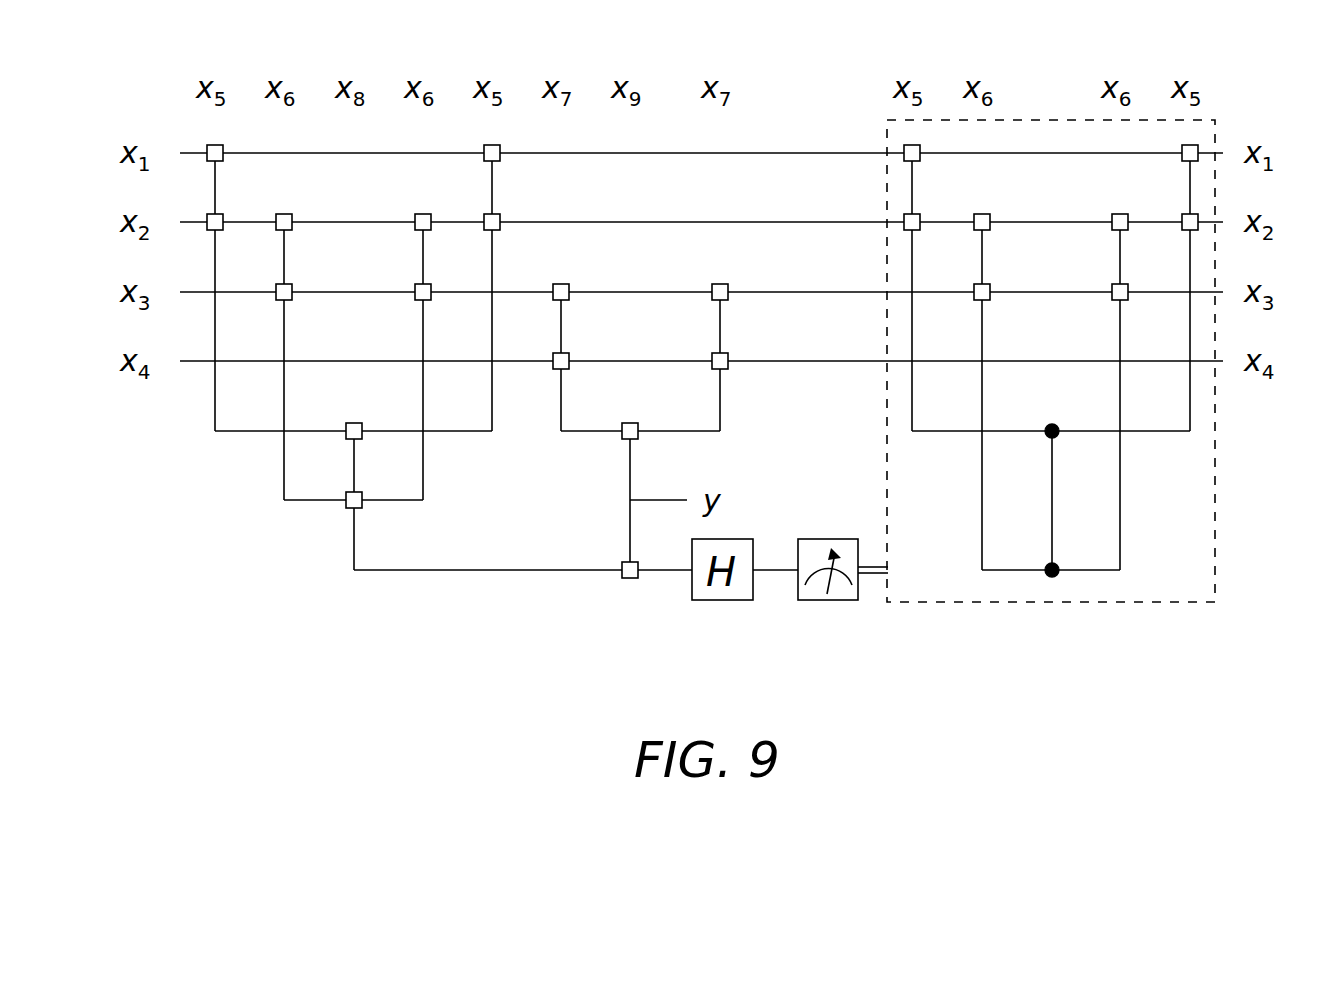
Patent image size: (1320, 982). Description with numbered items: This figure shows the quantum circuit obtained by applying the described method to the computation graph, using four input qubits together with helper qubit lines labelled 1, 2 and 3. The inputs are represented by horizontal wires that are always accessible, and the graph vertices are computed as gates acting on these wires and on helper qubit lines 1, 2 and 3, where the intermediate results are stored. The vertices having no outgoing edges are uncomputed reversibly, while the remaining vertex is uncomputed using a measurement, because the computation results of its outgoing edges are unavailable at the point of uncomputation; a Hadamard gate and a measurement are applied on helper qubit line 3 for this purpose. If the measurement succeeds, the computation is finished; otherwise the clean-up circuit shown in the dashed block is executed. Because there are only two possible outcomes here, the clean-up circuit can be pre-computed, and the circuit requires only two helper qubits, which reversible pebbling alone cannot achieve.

The first ancilla qubit wire 1 is at (665, 431).
The second ancilla qubit wire 2 is at (413, 500).
The third ancilla qubit wire 3 is at (630, 570).